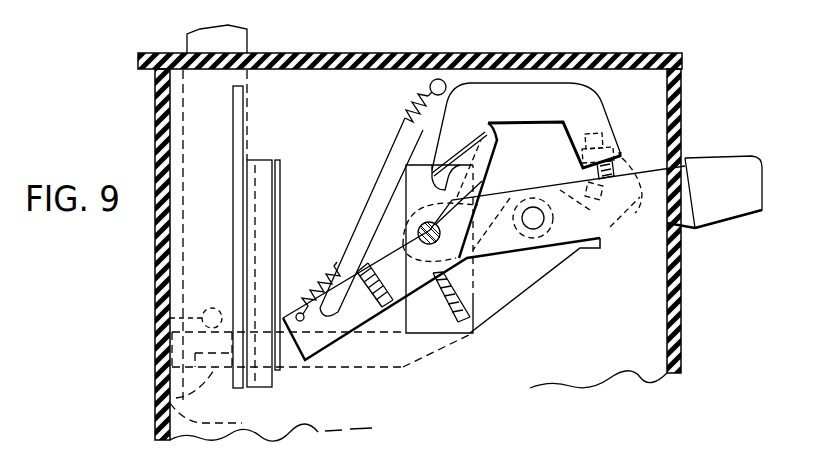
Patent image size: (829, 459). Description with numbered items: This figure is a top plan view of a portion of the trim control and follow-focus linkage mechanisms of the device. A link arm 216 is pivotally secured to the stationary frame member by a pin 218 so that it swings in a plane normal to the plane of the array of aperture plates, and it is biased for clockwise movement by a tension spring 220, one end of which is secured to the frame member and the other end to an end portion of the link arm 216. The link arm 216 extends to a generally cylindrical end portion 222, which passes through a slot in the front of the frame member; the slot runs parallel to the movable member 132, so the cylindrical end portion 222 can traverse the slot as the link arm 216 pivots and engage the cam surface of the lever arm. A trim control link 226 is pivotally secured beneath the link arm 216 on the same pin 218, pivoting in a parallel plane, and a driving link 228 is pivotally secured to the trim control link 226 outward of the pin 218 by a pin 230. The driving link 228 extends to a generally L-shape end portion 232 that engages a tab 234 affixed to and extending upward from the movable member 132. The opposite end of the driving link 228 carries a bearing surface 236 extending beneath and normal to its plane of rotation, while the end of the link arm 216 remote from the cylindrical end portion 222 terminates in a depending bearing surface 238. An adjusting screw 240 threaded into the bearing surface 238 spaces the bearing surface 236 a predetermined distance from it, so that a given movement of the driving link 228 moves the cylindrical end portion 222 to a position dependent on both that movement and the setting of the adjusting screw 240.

The movable member 132 is at (247, 33).
The link arm 216 is at (405, 272).
The pin 218 is at (526, 170).
The tension spring 220 is at (414, 108).
The cylindrical end portion 222 is at (168, 403).
The trim control link 226 is at (740, 157).
The driving link 228 is at (505, 274).
The pin 230 is at (543, 226).
The L-shape end portion 232 is at (168, 348).
The tab 234 is at (167, 318).
The bearing surface 236 is at (624, 162).
The bearing surface 238 is at (597, 170).
The adjusting screw 240 is at (622, 158).